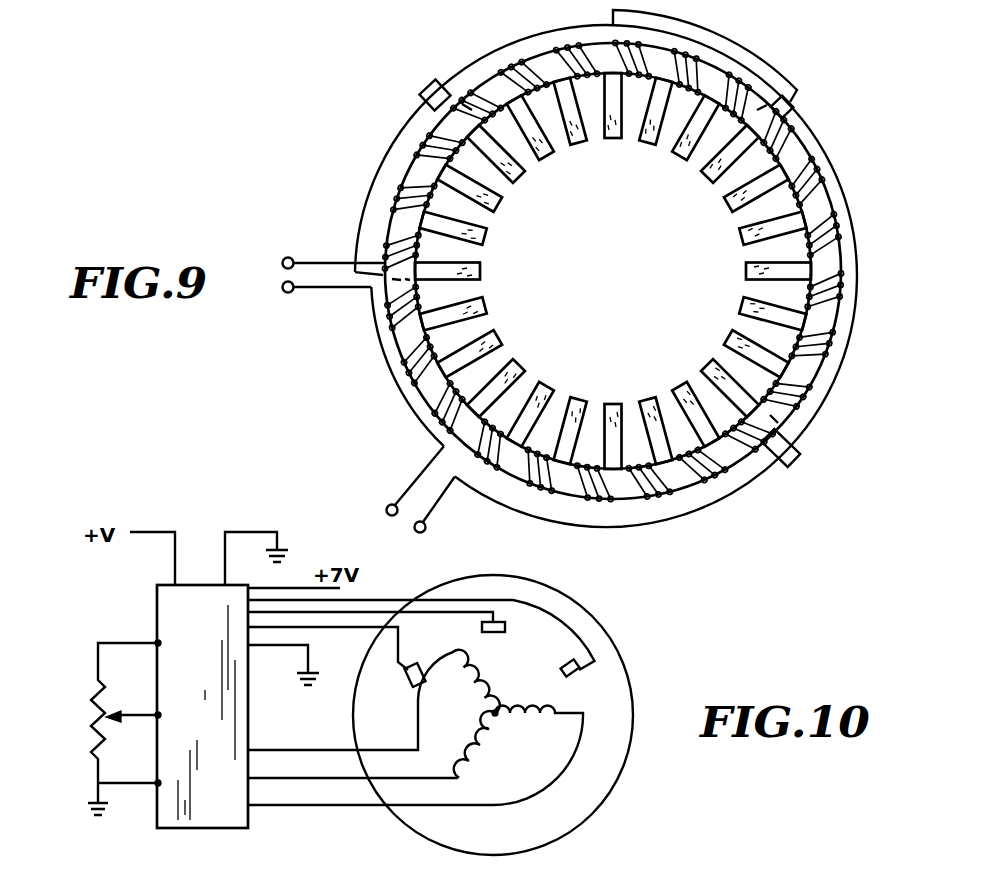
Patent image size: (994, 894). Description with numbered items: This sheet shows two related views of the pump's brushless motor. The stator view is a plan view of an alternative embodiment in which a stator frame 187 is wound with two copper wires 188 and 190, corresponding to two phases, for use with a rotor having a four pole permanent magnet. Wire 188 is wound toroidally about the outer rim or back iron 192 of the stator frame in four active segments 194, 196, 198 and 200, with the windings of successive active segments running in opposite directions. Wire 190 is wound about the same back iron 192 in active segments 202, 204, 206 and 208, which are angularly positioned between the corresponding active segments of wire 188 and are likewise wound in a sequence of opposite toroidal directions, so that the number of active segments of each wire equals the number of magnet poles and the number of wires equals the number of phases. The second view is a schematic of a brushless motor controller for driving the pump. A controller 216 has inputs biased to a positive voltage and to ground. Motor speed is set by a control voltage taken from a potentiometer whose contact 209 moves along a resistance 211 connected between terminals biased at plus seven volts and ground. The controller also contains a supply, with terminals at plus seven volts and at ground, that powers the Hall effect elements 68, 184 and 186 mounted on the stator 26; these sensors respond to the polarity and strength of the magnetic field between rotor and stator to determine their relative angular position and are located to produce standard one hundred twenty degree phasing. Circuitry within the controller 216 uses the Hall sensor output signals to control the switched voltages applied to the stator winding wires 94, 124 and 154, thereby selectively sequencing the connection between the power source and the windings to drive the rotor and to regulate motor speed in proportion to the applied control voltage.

In FIG. 9, the active segment 196 is at (563, 57).
In FIG. 9, the active segment 204 is at (718, 80).
In FIG. 9, the outer rim or back iron 192 is at (455, 118).
In FIG. 9, the active segment 202 is at (423, 172).
In FIG. 9, the active segment 198 is at (823, 163).
In FIG. 9, the active segment 206 is at (737, 256).
In FIG. 9, the stator frame 187 is at (787, 447).
In FIG. 9, the active segment 200 is at (715, 462).
In FIG. 9, the active segment 208 is at (548, 482).
In FIG. 9, the active segment 194 is at (405, 380).
In FIG. 9, the copper wire 188 is at (448, 491).
In FIG. 9, the copper wire 190 is at (317, 290).
In FIG. 10, the controller 216 is at (210, 810).
In FIG. 10, the contact 209 is at (140, 713).
In FIG. 10, the resistance 211 is at (97, 707).
In FIG. 10, the stator 26 is at (622, 768).
In FIG. 10, the Hall effect semiconductor element 68 is at (405, 678).
In FIG. 10, the Hall effect semiconductor element 184 is at (493, 633).
In FIG. 10, the Hall effect semiconductor element 186 is at (580, 672).
In FIG. 10, the wire 94 is at (374, 700).
In FIG. 10, the wire 124 is at (533, 715).
In FIG. 10, the wire 154 is at (480, 757).